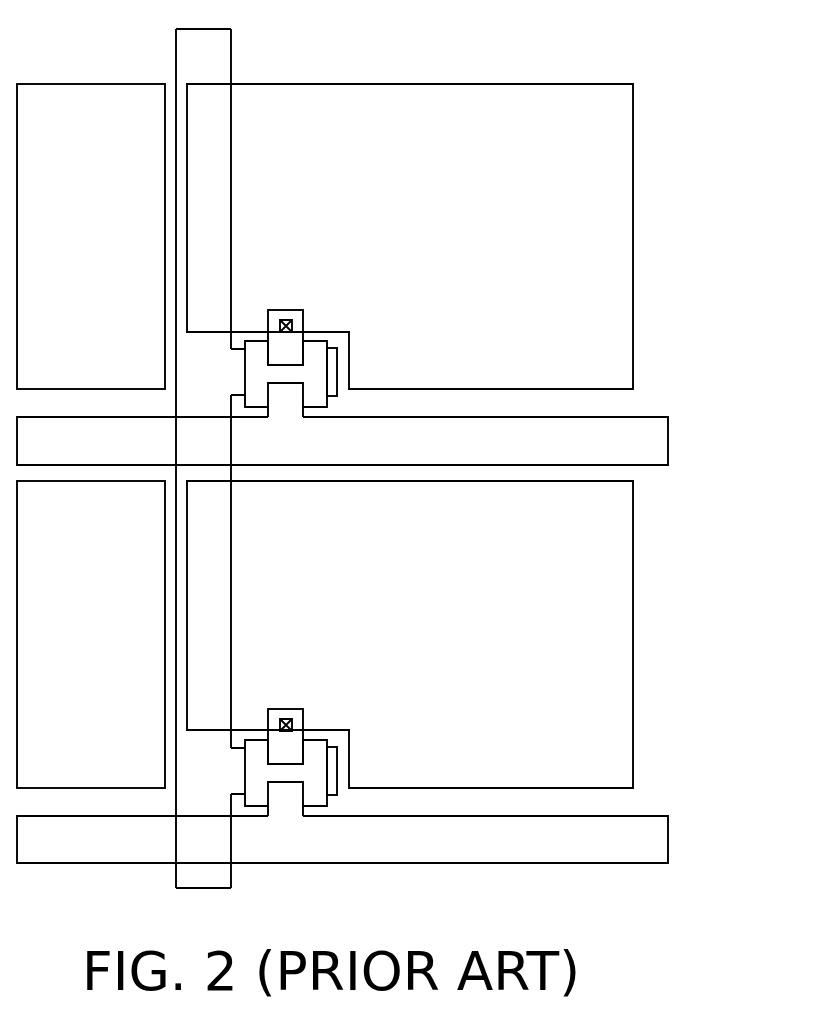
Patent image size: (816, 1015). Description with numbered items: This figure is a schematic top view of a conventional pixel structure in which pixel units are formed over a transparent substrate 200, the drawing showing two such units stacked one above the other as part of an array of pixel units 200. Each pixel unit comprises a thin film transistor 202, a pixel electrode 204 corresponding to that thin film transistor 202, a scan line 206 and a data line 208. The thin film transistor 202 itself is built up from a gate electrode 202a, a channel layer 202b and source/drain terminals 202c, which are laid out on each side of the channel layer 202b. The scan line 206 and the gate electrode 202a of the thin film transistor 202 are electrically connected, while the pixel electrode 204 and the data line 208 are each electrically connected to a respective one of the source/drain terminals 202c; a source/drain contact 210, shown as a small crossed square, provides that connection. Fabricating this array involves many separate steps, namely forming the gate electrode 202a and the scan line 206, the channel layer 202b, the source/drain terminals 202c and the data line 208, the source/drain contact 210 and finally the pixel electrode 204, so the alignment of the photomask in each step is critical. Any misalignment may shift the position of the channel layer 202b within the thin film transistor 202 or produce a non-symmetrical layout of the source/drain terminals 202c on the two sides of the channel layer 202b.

The transparent substrate 200 is at (580, 918).
The thin film transistor 202 is at (396, 536).
The gate electrode 202a is at (333, 380).
The channel layer 202b is at (317, 355).
The source/drain terminals 202c is at (298, 338).
The pixel electrode 204 is at (575, 102).
The scan line 206 is at (212, 50).
The data line 208 is at (642, 438).
The source/drain contact 210 is at (287, 320).